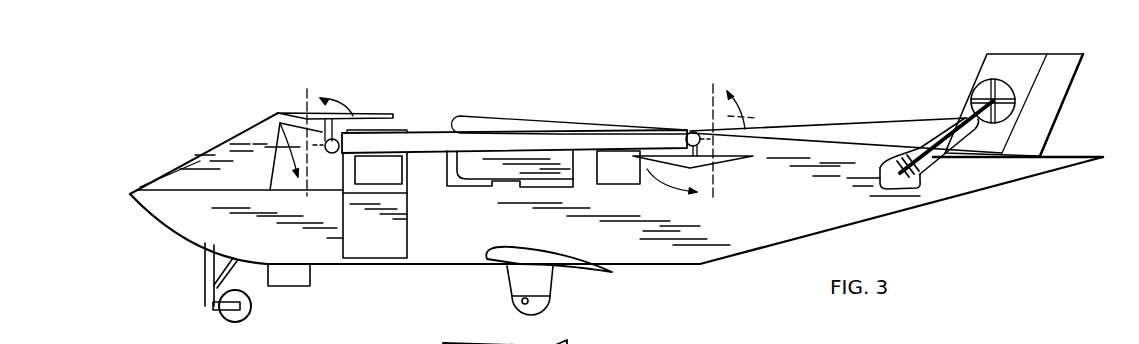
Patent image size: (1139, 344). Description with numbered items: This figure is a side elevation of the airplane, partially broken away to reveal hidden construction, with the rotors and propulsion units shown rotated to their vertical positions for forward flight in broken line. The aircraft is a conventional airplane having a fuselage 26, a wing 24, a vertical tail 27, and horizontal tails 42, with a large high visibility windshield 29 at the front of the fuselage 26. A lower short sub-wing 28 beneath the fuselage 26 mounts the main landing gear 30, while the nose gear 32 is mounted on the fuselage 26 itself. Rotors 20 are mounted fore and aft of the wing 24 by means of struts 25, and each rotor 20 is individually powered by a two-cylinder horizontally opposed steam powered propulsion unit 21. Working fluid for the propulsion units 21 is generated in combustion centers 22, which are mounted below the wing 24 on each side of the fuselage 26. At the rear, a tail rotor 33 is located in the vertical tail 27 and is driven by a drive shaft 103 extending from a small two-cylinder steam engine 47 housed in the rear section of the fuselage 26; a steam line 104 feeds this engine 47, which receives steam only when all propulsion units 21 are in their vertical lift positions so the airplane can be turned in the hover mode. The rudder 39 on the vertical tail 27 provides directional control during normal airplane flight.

The rotor 20 is at (328, 111).
The propulsion unit 21 is at (331, 165).
The combustion center 22 is at (533, 173).
The wing 24 is at (491, 120).
The strut 25 is at (421, 142).
The fuselage 26 is at (777, 228).
The vertical tail 27 is at (1005, 65).
The sub-wing 28 is at (547, 262).
The windshield 29 is at (217, 152).
The main landing gear 30 is at (520, 290).
The nose gear 32 is at (213, 303).
The tail rotor 33 is at (1030, 115).
The rudder 39 is at (1047, 78).
The horizontal tail 42 is at (1017, 157).
The steam engine 47 is at (917, 173).
The drive shaft 103 is at (953, 120).
The steam line 104 is at (882, 167).